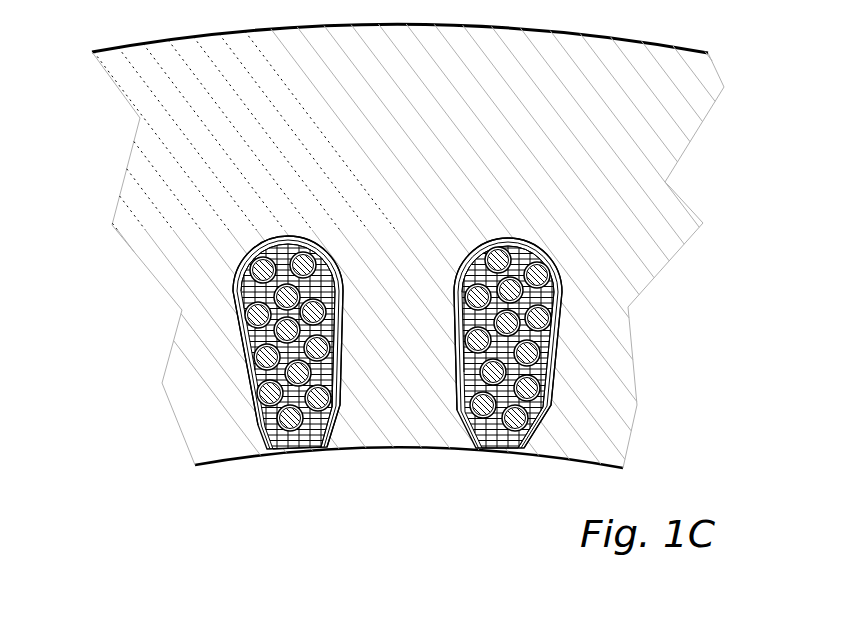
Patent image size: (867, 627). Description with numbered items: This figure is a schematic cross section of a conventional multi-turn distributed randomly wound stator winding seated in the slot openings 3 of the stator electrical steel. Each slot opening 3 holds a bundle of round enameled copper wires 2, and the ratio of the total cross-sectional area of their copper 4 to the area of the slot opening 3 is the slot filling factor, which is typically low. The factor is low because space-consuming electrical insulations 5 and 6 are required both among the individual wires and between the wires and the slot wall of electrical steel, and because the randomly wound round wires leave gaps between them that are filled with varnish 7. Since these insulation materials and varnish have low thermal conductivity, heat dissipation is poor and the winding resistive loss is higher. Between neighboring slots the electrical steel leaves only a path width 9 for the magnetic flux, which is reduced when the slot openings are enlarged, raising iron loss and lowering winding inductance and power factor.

The round enameled copper wires 2 is at (296, 240).
The slot opening 3 is at (211, 268).
The copper 4 is at (263, 266).
The electrical insulation 5 is at (318, 268).
The electrical insulation 6 is at (283, 238).
The varnish 7 is at (332, 328).
The path width 9 is at (397, 380).